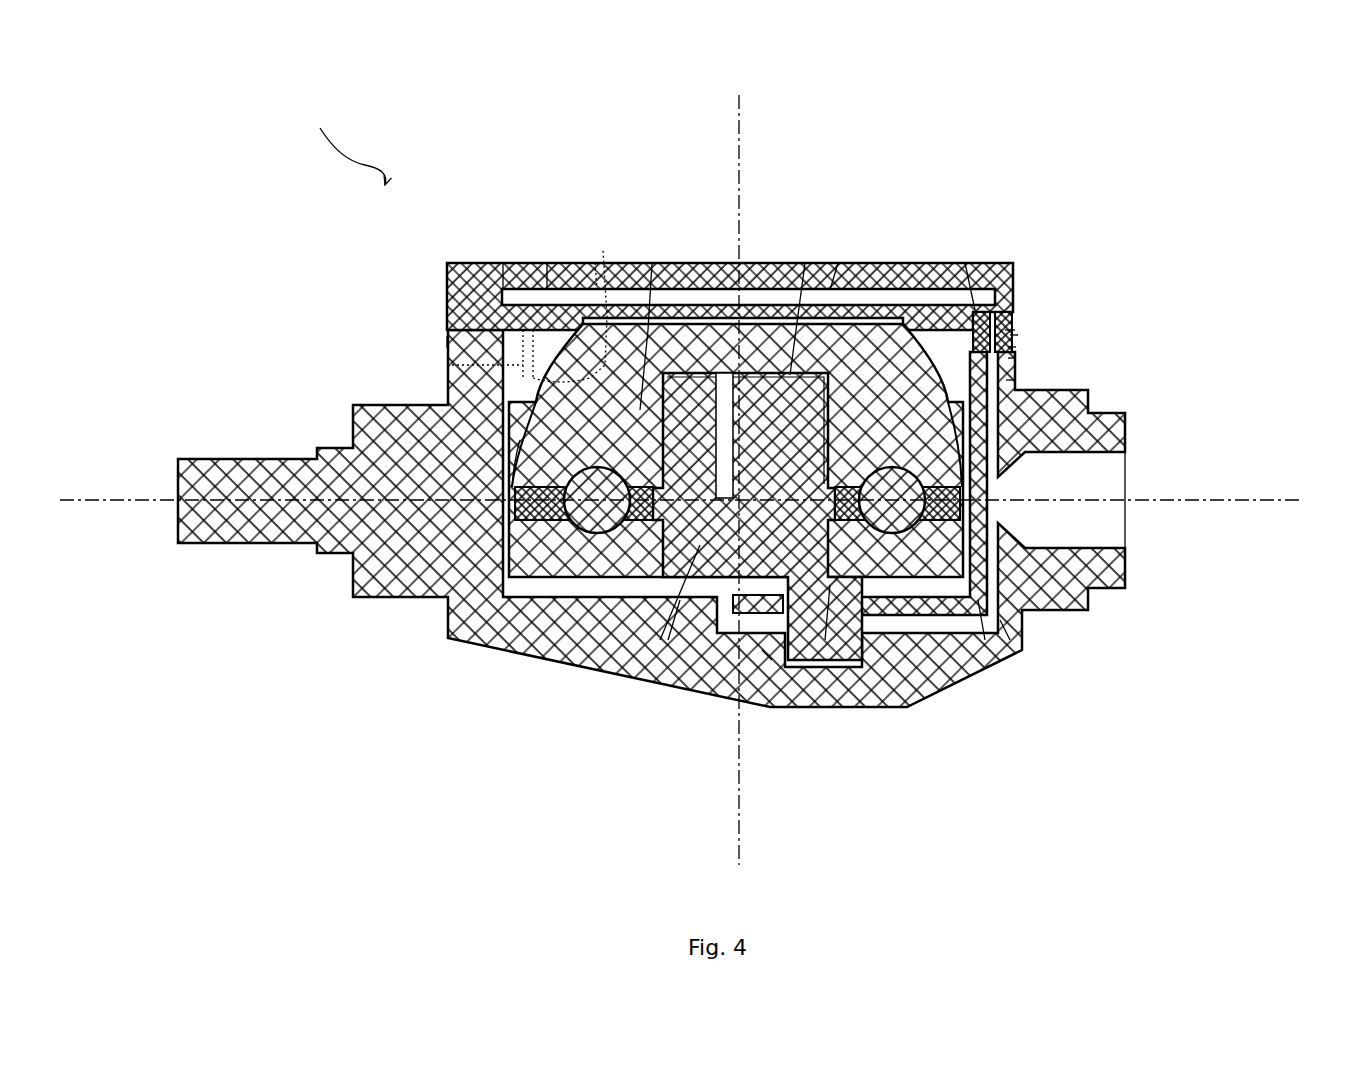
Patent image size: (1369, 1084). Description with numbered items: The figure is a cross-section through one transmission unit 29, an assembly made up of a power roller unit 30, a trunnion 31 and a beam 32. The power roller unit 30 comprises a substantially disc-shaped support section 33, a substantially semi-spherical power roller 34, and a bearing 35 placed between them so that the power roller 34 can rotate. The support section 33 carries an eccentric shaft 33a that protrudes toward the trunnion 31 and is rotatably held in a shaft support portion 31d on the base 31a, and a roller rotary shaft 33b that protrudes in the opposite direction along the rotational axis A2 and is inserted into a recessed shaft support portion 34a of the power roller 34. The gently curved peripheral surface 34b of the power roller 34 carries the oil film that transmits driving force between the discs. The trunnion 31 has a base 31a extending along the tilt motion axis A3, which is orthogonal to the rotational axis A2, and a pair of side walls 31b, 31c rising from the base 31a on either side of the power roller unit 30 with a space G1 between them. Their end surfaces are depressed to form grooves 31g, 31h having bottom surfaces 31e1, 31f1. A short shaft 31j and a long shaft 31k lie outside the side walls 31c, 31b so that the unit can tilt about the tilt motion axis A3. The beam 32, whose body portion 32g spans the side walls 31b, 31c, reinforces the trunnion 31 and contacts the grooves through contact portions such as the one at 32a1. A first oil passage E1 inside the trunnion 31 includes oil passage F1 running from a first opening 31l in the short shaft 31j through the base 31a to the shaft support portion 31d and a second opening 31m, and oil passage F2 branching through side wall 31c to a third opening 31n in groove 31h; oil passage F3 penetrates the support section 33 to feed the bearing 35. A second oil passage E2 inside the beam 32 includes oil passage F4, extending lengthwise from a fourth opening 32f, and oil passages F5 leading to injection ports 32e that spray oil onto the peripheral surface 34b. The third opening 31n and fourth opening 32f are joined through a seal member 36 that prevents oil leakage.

The transmission unit 29 is at (339, 143).
The power roller unit 30 is at (547, 263).
The trunnion 31 is at (484, 652).
The base 31a is at (668, 640).
The side wall 31b is at (503, 400).
The side wall 31c is at (1013, 358).
The shaft support portion 31d is at (762, 650).
The bottom surface 31e1 is at (447, 305).
The bottom surface 31f1 is at (1010, 330).
The groove 31g is at (445, 342).
The groove 31h is at (1015, 335).
The short shaft 31j is at (1105, 612).
The long shaft 31k is at (250, 543).
The first opening 31l is at (1128, 470).
The second opening 31m is at (735, 605).
The third opening 31n is at (1012, 347).
The beam 32 is at (470, 262).
The cap inner surface 32a1 is at (503, 263).
The injection port 32e is at (595, 263).
The fourth opening 32f is at (965, 350).
The body portion 32g is at (700, 263).
The support section 33 is at (555, 580).
The eccentric shaft 33a is at (825, 640).
The roller rotary shaft 33b is at (805, 263).
The power roller 34 is at (840, 375).
The shaft support portion 34a is at (652, 263).
The peripheral surface 34b is at (515, 430).
The bearing 35 is at (905, 545).
The seal member 36 is at (1000, 312).
The rotational axis A2 is at (741, 465).
The tilt motion axis A3 is at (698, 499).
The first oil passage E1 is at (1010, 640).
The second oil passage E2 is at (838, 263).
The oil passage F1 is at (985, 640).
The oil passage F2 is at (1012, 380).
The oil passage F3 is at (660, 640).
The oil passage F4 is at (965, 263).
The oil passage F5 is at (447, 365).
The space G1 is at (505, 420).